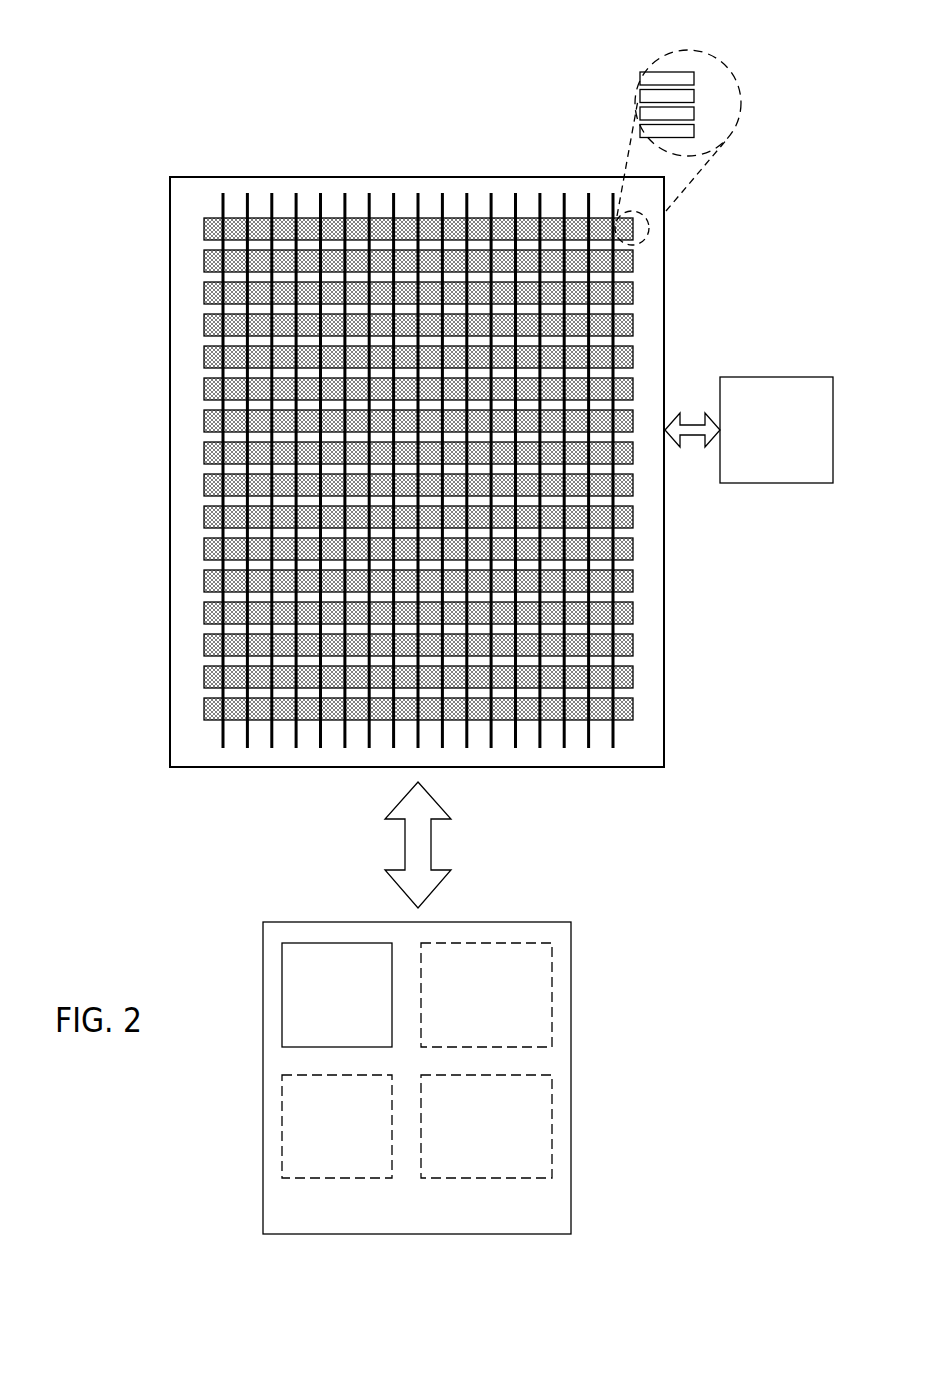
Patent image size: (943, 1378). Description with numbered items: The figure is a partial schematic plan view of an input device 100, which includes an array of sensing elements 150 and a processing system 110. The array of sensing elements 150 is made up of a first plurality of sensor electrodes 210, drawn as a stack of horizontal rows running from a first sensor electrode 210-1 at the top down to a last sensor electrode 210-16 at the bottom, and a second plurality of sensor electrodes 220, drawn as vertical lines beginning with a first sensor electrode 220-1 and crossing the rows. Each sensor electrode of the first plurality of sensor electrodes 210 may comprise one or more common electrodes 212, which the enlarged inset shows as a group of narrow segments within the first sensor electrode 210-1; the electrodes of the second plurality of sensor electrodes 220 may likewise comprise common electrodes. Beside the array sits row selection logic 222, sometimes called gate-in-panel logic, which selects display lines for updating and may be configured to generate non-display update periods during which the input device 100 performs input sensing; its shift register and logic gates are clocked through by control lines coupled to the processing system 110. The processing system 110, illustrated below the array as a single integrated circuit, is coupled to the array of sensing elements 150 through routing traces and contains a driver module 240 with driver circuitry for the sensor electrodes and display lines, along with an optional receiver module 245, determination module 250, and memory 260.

The input device 100 is at (138, 114).
The processing system 110 is at (497, 1213).
The array of sensing elements 150 is at (280, 209).
The first plurality of sensor electrodes 210 is at (150, 730).
The first sensor electrode of the first plurality 210-1 is at (203, 228).
The sixteenth sensor electrode of the first plurality 210-16 is at (203, 709).
The common electrodes 212 is at (697, 76).
The second plurality of sensor electrodes 220 is at (210, 163).
The first sensor electrode of the second plurality 220-1 is at (224, 207).
The row selection logic 222 is at (759, 475).
The driver module 240 is at (320, 1024).
The receiver module 245 is at (320, 1154).
The determination module 250 is at (469, 1154).
The memory 260 is at (469, 1017).